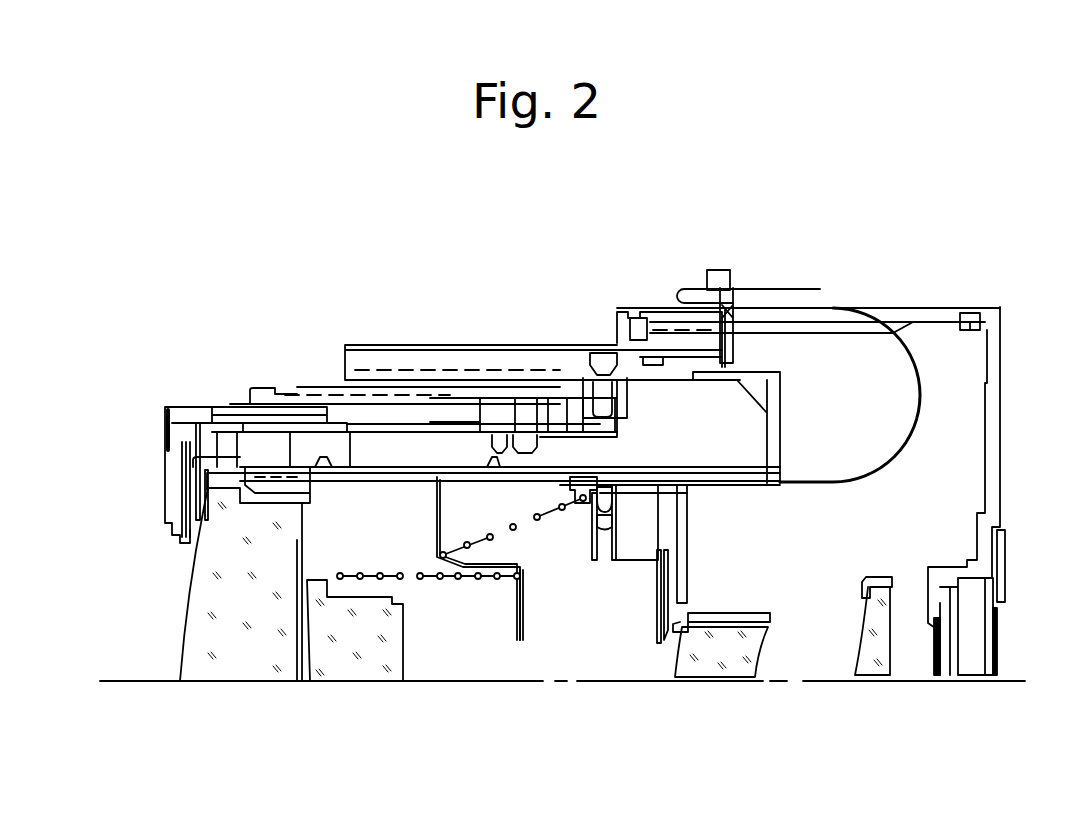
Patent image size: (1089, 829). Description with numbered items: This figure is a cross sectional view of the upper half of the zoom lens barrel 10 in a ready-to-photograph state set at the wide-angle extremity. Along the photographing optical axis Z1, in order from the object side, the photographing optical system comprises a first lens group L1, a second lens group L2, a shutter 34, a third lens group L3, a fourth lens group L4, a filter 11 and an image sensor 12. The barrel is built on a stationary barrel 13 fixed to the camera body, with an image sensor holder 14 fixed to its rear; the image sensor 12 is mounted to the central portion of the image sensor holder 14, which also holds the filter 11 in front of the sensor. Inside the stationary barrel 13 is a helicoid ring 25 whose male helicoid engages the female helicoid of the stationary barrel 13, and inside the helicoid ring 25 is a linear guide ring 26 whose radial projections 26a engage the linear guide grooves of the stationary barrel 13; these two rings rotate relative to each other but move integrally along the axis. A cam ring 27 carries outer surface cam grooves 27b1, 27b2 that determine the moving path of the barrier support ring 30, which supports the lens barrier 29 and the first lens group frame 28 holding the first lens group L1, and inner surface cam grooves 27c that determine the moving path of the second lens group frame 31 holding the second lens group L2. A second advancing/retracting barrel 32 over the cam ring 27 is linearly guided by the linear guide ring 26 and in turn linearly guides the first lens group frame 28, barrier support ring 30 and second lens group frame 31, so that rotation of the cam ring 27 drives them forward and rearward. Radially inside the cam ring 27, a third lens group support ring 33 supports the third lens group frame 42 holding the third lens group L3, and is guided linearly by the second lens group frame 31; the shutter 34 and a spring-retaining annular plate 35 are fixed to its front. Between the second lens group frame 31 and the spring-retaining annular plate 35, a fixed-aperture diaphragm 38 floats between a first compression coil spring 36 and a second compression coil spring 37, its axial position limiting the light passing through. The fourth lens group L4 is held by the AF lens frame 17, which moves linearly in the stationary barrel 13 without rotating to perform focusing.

The zoom lens barrel 10 is at (918, 203).
The filter 11 is at (940, 655).
The image sensor 12 is at (978, 625).
The stationary barrel 13 is at (932, 312).
The image sensor holder 14 is at (995, 493).
The AF lens frame 17 is at (882, 580).
The helicoid ring 25 is at (532, 347).
The linear guide ring 26 is at (668, 352).
The radial projections 26a is at (733, 305).
The cam ring 27 is at (390, 453).
The outer surface cam groove 27b1 is at (492, 443).
The outer surface cam groove 27b2 is at (580, 450).
The inner surface cam grooves 27c is at (322, 468).
The first lens group frame 28 is at (265, 425).
The lens barrier 29 is at (170, 513).
The barrier support ring 30 is at (223, 410).
The second lens group frame 31 is at (733, 468).
The second advancing/retracting barrel 32 is at (313, 392).
The third lens group support ring 33 is at (683, 524).
The shutter 34 is at (637, 550).
The spring-retaining annular plate 35 is at (595, 550).
The first compression coil spring 36 is at (438, 580).
The second compression coil spring 37 is at (540, 518).
The diaphragm 38 is at (522, 618).
The third lens group frame 42 is at (737, 618).
The photographing optical axis Z1 is at (137, 683).
The first lens group L1 is at (230, 668).
The second lens group L2 is at (345, 668).
The third lens group L3 is at (695, 660).
The fourth lens group L4 is at (866, 660).